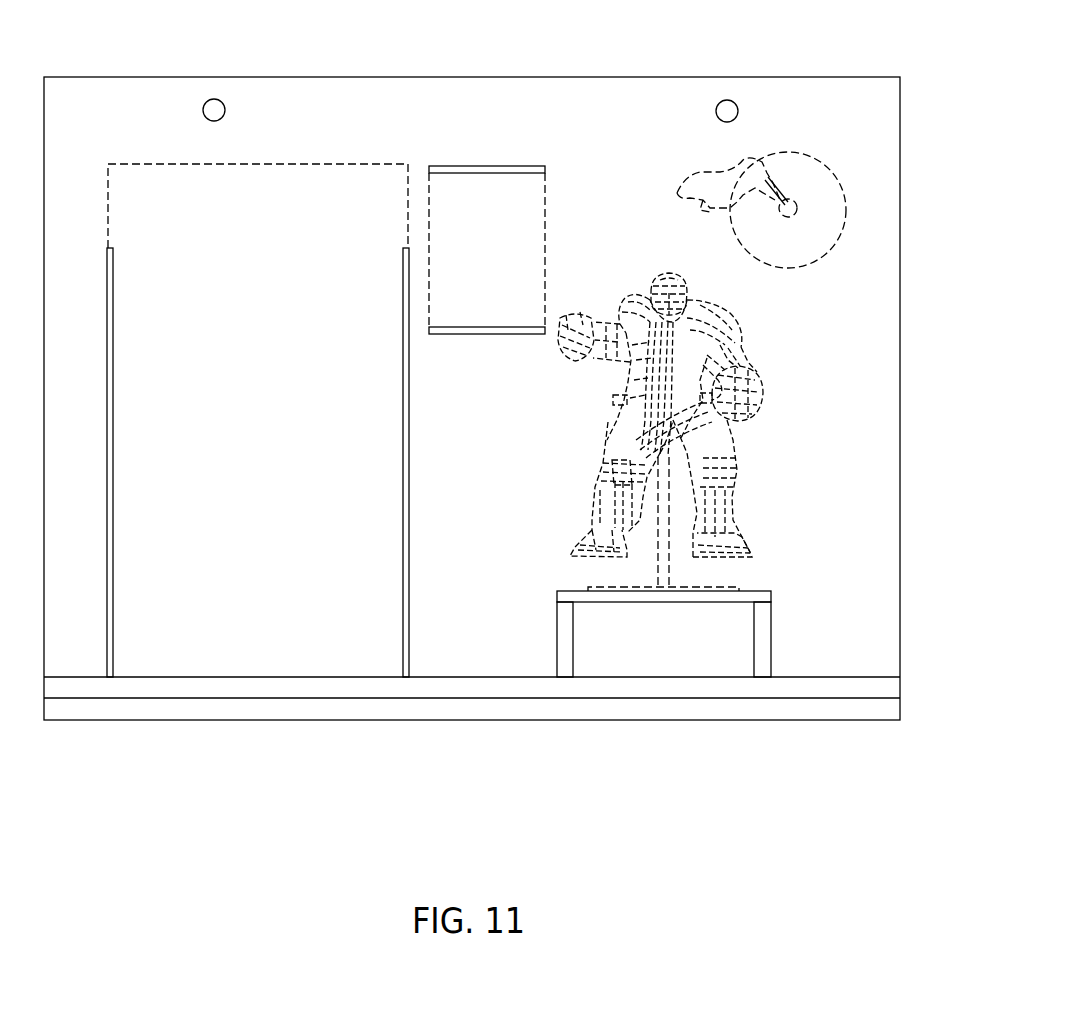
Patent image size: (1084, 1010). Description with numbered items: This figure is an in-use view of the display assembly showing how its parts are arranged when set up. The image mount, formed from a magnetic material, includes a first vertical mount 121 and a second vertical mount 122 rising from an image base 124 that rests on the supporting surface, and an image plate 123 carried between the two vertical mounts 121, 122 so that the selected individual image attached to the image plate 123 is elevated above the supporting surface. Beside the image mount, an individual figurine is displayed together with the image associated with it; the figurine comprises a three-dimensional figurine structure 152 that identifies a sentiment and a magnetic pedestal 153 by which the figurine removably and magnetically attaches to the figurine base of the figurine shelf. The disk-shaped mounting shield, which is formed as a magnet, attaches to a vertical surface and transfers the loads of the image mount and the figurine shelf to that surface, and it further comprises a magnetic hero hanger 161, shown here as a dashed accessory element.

The first vertical mount 121 is at (113, 643).
The second vertical mount 122 is at (403, 610).
The image plate 123 is at (307, 203).
The image base 124 is at (438, 678).
The figurine structure 152 is at (743, 343).
The magnetic pedestal 153 is at (665, 565).
The magnetic hero hanger 161 is at (782, 150).